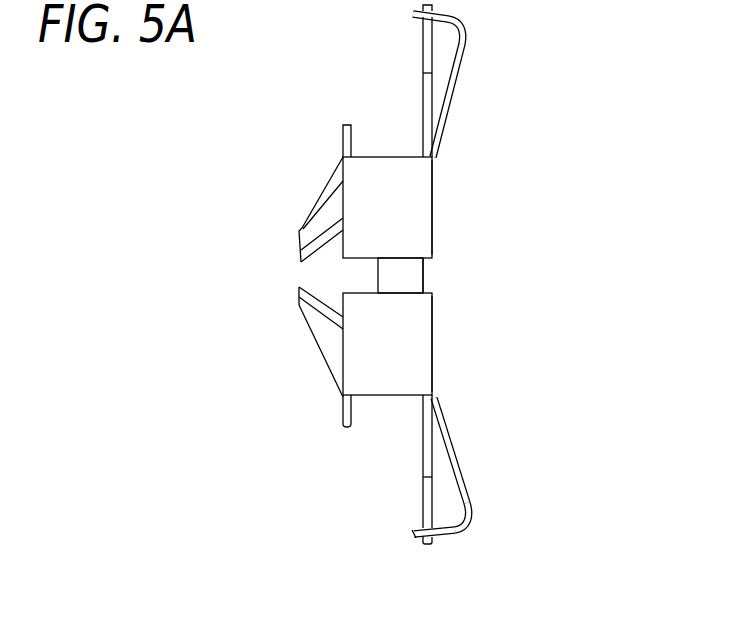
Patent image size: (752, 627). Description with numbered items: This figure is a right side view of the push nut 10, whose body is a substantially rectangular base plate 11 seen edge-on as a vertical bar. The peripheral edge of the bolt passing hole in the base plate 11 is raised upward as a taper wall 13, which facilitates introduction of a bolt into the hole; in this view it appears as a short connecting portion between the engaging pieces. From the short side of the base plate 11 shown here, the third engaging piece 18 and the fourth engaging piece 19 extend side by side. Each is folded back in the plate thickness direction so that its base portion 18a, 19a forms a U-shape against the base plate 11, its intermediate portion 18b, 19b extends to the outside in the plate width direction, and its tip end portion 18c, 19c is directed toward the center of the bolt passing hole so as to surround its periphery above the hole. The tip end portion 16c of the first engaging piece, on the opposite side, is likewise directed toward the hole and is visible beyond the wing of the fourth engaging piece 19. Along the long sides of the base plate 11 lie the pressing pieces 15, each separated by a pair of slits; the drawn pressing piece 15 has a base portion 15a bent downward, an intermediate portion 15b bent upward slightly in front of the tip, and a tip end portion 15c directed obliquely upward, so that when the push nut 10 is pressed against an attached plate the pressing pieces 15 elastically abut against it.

The push nut 10 is at (575, 125).
The base plate 11 is at (422, 508).
The taper wall 13 is at (405, 273).
The pressing piece 15 is at (468, 53).
The base portion 15a is at (462, 461).
The intermediate portion 15b is at (468, 515).
The tip end portion 15c is at (438, 537).
The tip end portion 16c is at (313, 197).
The third engaging piece 18 is at (415, 355).
The base portion 18a is at (415, 330).
The intermediate portion 18b is at (343, 415).
The tip end portion 18c is at (313, 332).
The fourth engaging piece 19 is at (400, 207).
The base portion 19a is at (415, 192).
The intermediate portion 19b is at (352, 136).
The tip end portion 19c is at (312, 230).